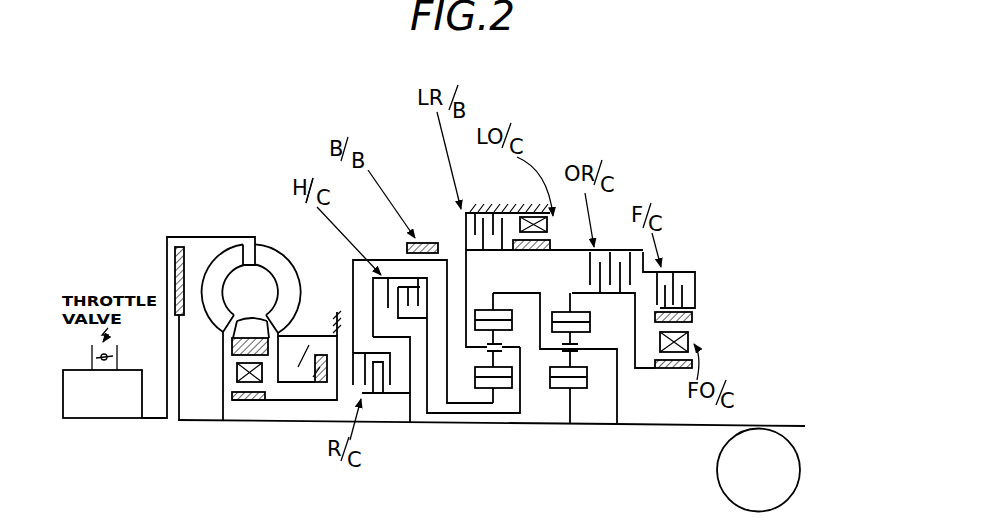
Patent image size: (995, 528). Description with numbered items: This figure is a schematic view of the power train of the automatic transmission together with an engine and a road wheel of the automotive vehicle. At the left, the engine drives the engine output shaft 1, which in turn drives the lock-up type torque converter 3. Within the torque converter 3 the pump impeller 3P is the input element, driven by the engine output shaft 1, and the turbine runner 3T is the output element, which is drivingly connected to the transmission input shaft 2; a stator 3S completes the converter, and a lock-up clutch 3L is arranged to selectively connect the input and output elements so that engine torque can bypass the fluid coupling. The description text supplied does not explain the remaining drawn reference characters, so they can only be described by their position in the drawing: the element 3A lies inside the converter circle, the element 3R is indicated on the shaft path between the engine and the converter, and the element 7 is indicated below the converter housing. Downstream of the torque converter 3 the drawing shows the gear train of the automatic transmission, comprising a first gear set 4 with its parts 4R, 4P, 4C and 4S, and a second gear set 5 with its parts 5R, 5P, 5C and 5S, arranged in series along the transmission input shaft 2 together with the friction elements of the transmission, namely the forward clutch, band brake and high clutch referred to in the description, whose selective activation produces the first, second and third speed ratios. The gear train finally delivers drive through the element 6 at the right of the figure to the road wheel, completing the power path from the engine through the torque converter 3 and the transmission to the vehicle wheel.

The engine output shaft 1 is at (150, 421).
The transmission input shaft 2 is at (272, 422).
The lock-up type torque converter 3 is at (251, 287).
The pump impeller 3P is at (290, 288).
The turbine runner 3T is at (217, 258).
The stator 3S is at (257, 323).
The lock-up clutch chamber 3A is at (262, 283).
The lock-up clutch 3L is at (175, 284).
The converter input shaft 3R is at (172, 343).
The oil pump drive 7 is at (227, 379).
The front planetary gear set 4 is at (553, 357).
The front ring gear 4R is at (483, 308).
The front pinion gear 4P is at (513, 322).
The front pinion carrier 4C is at (518, 345).
The front sun gear 4S is at (482, 380).
The rear planetary gear set 5 is at (593, 384).
The rear ring gear 5R is at (580, 317).
The rear pinion gear 5P is at (590, 373).
The rear pinion carrier 5C is at (595, 351).
The rear sun gear 5S is at (562, 382).
The output shaft 6 is at (690, 427).